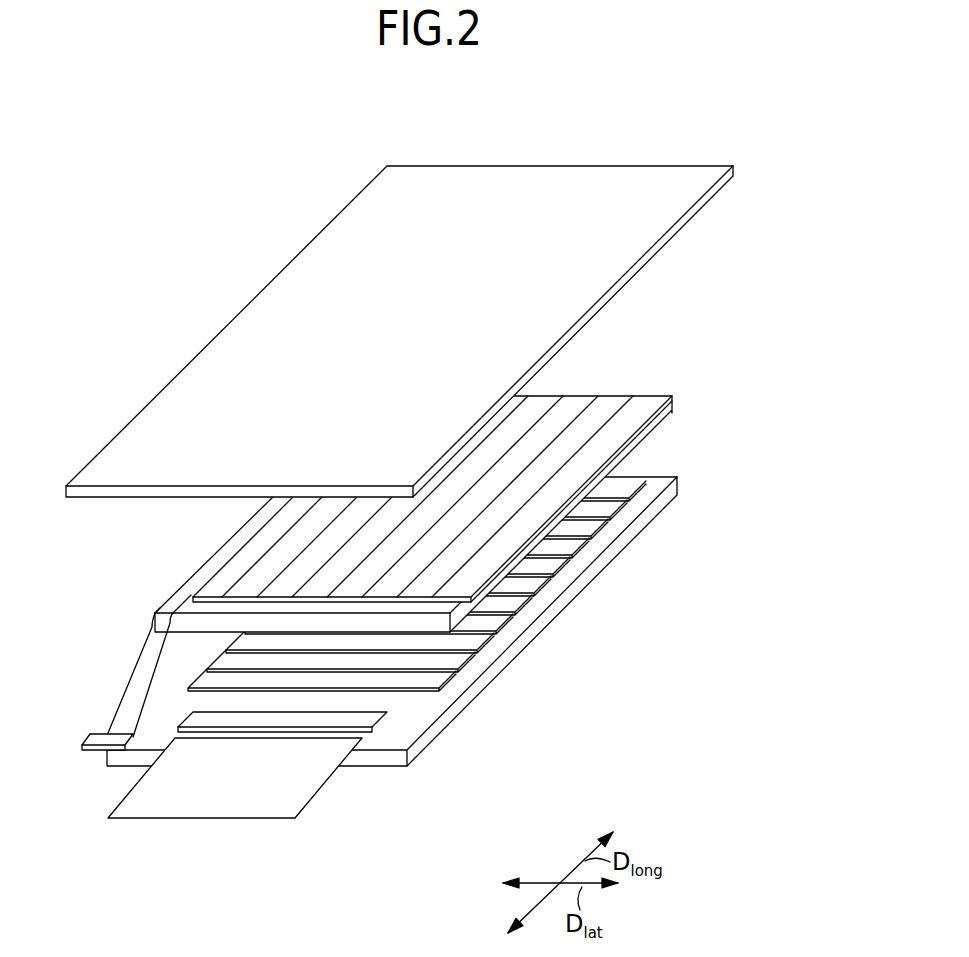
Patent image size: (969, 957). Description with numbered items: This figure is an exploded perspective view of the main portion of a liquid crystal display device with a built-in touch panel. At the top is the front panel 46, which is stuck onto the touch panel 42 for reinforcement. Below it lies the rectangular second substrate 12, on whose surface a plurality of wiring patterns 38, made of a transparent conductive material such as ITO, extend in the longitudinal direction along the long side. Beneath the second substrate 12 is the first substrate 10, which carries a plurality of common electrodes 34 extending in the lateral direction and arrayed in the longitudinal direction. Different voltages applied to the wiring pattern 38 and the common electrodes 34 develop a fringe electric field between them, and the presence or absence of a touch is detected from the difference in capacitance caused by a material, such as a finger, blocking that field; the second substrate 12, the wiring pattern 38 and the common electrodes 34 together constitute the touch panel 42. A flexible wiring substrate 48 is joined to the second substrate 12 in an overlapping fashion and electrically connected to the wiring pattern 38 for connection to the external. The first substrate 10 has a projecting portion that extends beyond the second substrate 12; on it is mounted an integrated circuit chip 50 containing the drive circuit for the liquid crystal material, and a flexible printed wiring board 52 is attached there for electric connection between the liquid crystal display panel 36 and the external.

The first substrate 10 is at (780, 625).
The second substrate 12 is at (674, 401).
The common electrodes 34 is at (600, 515).
The liquid crystal display panel 36 is at (468, 591).
The wiring pattern 38 is at (590, 408).
The touch panel 42 is at (445, 399).
The front panel 46 is at (735, 171).
The flexible wiring substrate 48 is at (158, 680).
The integrated circuit chip 50 is at (372, 715).
The flexible printed wiring board 52 is at (258, 808).